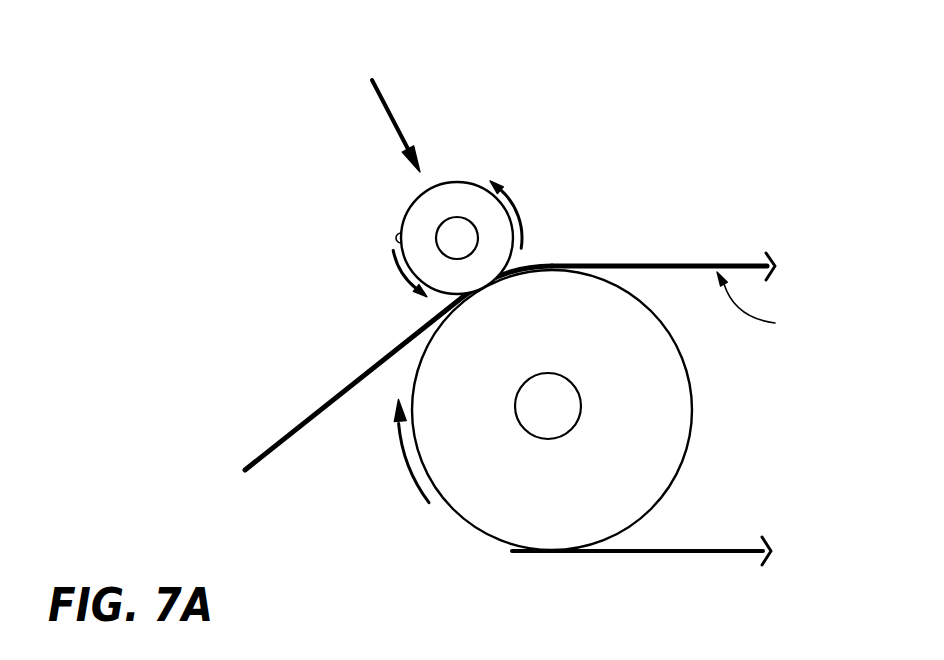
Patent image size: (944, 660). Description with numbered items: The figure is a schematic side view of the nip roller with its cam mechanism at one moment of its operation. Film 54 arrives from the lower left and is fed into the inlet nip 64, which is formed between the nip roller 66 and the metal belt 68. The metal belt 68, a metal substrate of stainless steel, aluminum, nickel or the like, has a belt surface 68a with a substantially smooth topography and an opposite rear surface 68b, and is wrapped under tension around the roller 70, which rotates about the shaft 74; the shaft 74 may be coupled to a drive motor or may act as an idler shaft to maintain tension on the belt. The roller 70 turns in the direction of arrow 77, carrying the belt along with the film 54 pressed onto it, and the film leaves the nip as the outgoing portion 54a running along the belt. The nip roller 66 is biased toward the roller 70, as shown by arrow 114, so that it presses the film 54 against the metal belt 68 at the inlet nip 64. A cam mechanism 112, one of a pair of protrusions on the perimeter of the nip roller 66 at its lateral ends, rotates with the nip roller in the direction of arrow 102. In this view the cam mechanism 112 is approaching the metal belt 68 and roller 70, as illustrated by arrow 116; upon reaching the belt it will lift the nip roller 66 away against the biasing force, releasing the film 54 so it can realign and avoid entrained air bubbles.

The film 54 is at (289, 426).
The web portion exiting nip 54a is at (682, 263).
The inlet nip 64 is at (437, 300).
The nip roller 66 is at (460, 188).
The metal belt 68 is at (759, 305).
The belt surface 68a is at (627, 552).
The rear surface 68b is at (717, 548).
The roller 70 is at (532, 537).
The shaft 74 is at (535, 388).
The arrow 77 is at (405, 468).
The arrow 102 is at (522, 216).
The cam mechanism 112 is at (393, 237).
The arrow 114 is at (388, 106).
The arrow 116 is at (400, 276).